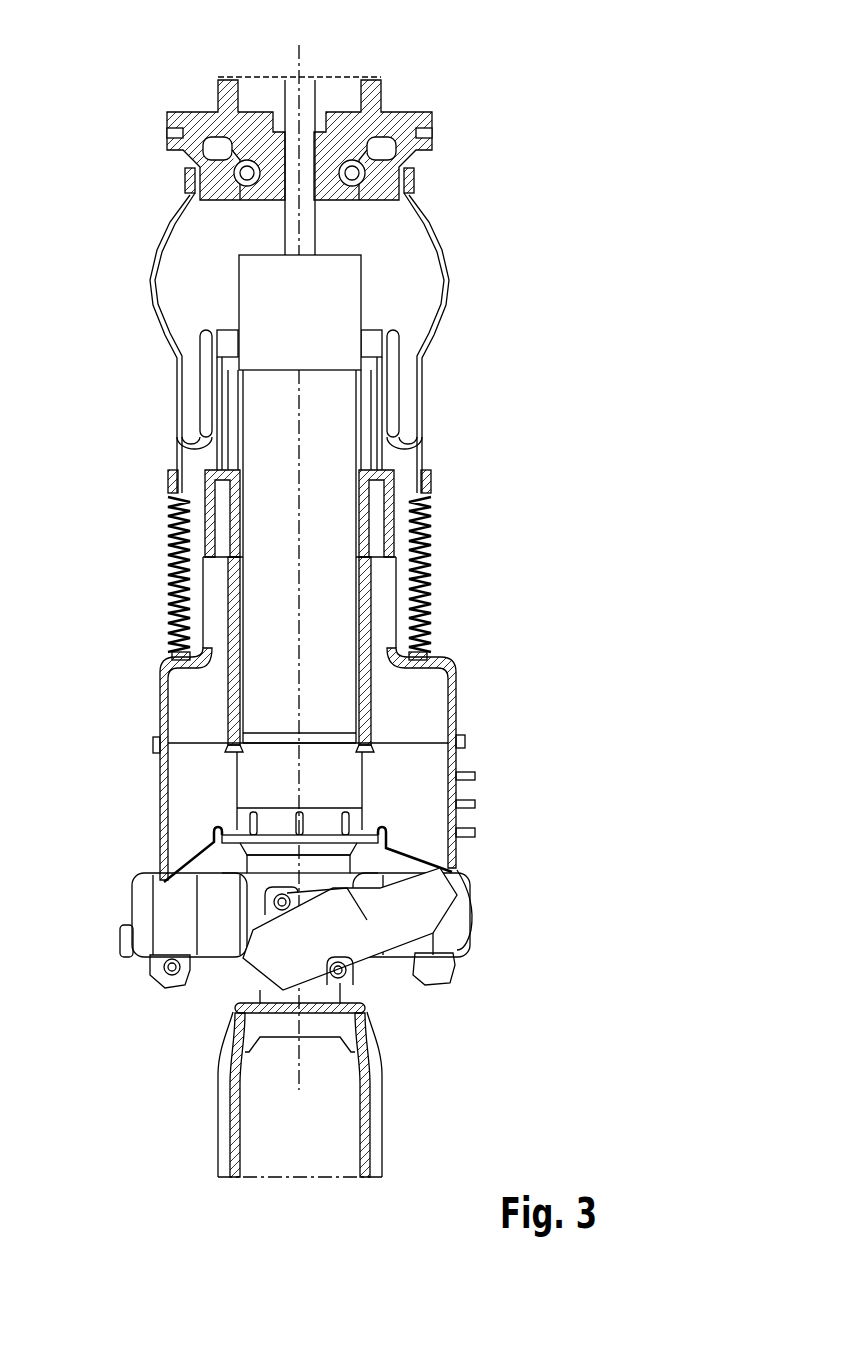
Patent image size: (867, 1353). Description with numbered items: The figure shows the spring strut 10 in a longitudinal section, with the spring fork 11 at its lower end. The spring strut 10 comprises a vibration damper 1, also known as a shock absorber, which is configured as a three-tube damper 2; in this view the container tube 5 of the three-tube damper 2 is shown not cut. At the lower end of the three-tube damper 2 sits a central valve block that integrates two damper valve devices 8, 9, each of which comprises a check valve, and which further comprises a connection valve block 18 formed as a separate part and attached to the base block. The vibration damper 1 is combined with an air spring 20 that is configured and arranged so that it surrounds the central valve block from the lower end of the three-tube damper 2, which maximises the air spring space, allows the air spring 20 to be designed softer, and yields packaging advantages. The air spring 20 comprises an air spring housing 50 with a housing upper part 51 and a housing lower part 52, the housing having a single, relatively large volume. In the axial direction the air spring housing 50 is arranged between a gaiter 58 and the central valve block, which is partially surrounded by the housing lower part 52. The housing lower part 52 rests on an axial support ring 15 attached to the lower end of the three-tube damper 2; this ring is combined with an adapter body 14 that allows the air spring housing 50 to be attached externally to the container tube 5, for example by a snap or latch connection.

The vibration damper 1 is at (463, 97).
The three-tube damper 2 is at (442, 407).
The container tube 5 is at (328, 520).
The gaiter 58 is at (430, 565).
The adapter body 14 is at (270, 817).
The axial support ring 15 is at (328, 837).
The housing upper part 51 is at (157, 730).
The air spring housing 50 is at (157, 797).
The housing lower part 52 is at (157, 853).
The air spring 20 is at (482, 817).
The damper valve device 8 is at (118, 953).
The damper valve device 9 is at (490, 943).
The connection valve block 18 is at (290, 953).
The spring strut 10 is at (395, 1142).
The spring fork 11 is at (240, 1162).